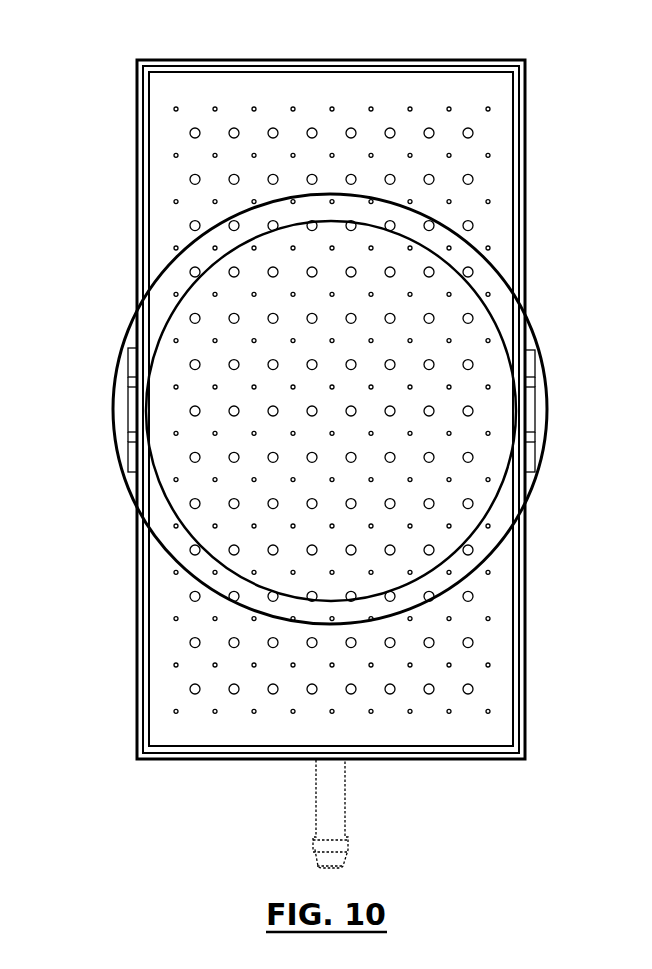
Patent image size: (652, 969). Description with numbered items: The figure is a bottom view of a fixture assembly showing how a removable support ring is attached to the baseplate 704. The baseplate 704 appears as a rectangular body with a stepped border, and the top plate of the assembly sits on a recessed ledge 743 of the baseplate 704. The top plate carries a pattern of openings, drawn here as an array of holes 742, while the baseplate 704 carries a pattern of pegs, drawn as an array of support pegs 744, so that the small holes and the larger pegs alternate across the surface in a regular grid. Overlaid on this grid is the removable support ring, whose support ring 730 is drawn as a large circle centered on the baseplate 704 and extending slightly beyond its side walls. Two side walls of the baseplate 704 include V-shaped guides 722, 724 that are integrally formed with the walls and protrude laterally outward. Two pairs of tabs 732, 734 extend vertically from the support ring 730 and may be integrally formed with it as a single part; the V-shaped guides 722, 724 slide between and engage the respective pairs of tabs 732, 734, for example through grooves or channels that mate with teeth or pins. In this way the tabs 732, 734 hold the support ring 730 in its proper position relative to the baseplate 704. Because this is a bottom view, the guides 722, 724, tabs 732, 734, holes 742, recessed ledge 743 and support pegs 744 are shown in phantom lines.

The baseplate 704 is at (137, 113).
The recessed ledge 743 is at (226, 69).
The array of holes 742 is at (332, 106).
The array of support pegs 744 is at (473, 224).
The support ring 730 is at (127, 333).
The pair of tabs 734 is at (128, 367).
The V-shaped guide 724 is at (128, 415).
The V-shaped guide 722 is at (535, 405).
The pair of tabs 732 is at (535, 363).